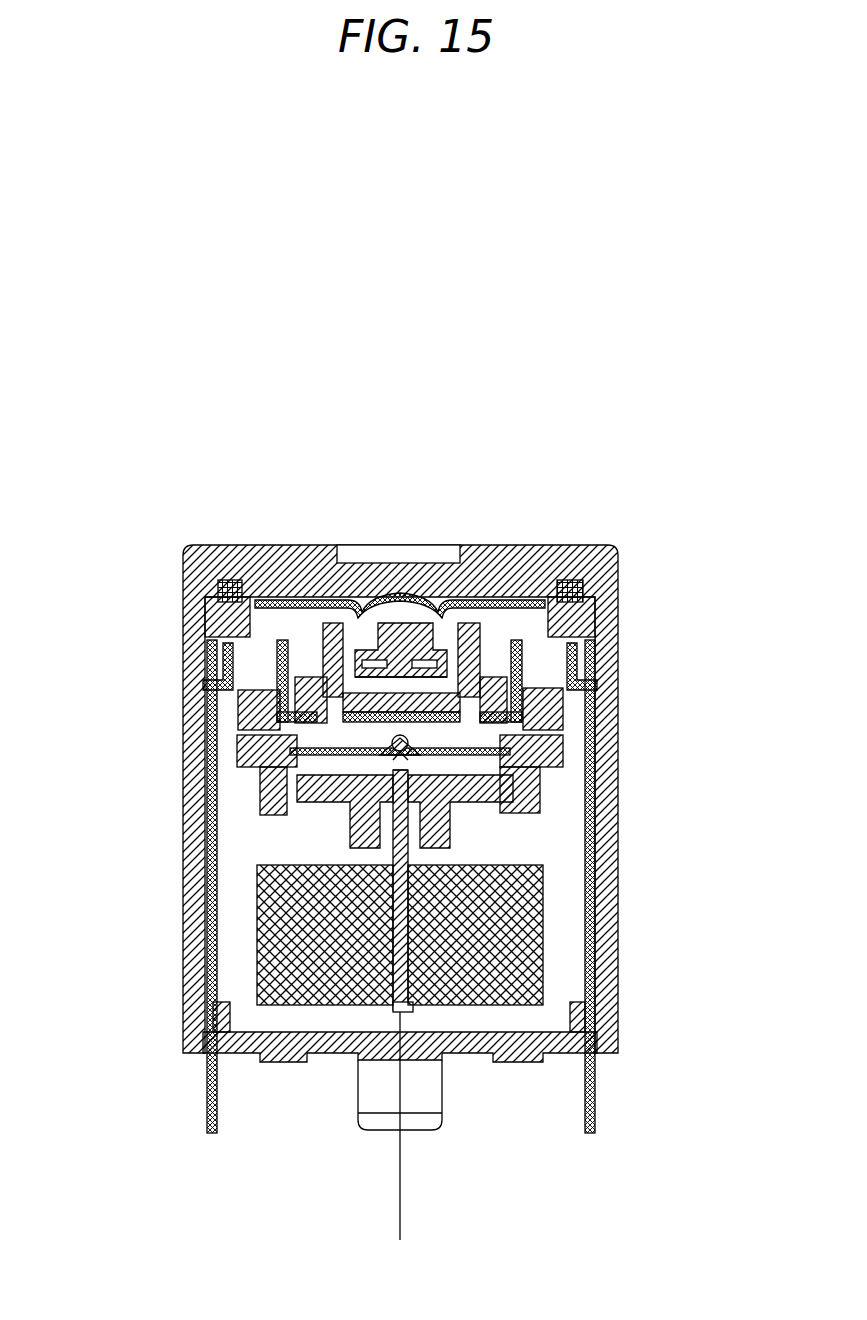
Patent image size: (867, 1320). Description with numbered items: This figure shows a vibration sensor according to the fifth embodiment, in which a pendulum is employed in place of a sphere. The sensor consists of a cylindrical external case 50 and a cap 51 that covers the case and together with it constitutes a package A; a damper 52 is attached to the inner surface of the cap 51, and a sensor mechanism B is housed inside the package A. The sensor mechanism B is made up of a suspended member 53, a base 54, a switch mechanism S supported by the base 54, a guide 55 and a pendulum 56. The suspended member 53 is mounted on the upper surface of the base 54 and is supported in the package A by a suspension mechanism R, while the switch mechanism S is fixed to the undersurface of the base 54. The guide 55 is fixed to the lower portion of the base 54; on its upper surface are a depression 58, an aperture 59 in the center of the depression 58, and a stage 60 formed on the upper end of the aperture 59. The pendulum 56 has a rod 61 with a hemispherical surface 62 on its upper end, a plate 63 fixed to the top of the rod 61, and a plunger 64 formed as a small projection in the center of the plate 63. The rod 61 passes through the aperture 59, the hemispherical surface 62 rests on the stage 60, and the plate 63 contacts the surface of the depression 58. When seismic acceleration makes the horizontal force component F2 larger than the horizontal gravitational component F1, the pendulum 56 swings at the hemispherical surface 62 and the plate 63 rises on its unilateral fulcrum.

The external case 50 is at (605, 848).
The cap 51 is at (610, 636).
The damper 52 is at (413, 600).
The suspended member 53 is at (330, 643).
The base 54 is at (262, 688).
The guide 55 is at (318, 695).
The pendulum 56 is at (258, 935).
The depression 58 is at (540, 770).
The aperture 59 is at (447, 820).
The stage 60 is at (395, 762).
The rod 61 is at (405, 768).
The hemispherical surface 62 is at (375, 775).
The plate 63 is at (330, 772).
The plunger 64 is at (450, 657).
The suspension mechanism R is at (410, 737).
The switch mechanism S is at (322, 737).
The sensor mechanism B is at (237, 852).
The package A is at (733, 608).
The horizontal component of gravitational force F1 is at (400, 1213).
The horizontal component of seismic force F2 is at (470, 1213).